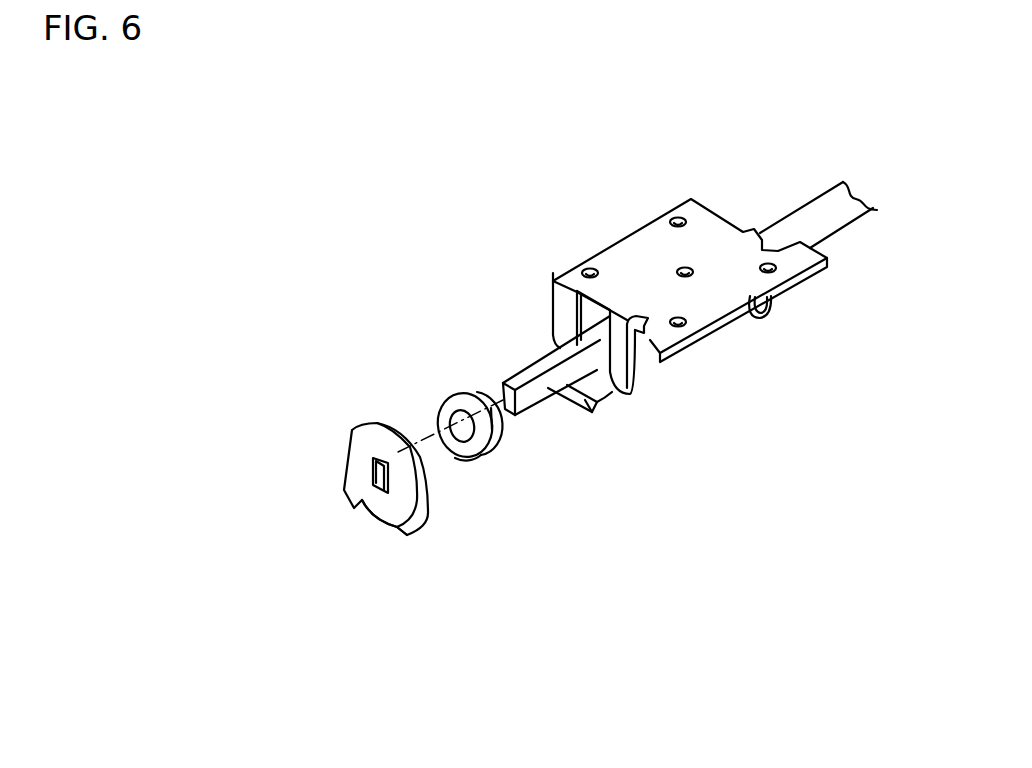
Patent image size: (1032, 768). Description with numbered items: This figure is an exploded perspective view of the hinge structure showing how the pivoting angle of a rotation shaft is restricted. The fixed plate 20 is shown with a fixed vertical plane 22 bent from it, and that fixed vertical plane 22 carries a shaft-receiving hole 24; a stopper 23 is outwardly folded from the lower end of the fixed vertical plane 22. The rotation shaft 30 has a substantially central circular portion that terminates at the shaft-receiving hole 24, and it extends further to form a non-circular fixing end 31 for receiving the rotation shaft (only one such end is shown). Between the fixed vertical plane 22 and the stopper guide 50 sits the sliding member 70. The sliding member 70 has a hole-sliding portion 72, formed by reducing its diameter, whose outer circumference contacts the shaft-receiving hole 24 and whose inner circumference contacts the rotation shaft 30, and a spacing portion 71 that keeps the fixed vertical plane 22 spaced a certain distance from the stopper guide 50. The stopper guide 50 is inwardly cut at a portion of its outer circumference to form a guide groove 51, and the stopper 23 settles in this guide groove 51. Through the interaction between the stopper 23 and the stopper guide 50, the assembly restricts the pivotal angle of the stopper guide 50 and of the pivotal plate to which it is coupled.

The fixed plate 20 is at (637, 247).
The fixed vertical plane 22 is at (560, 322).
The stopper 23 is at (603, 400).
The shaft-receiving hole 24 is at (622, 396).
The rotation shaft 30 is at (832, 210).
The non-circular fixing end 31 is at (548, 386).
The stopper guide 50 is at (377, 423).
The guide groove 51 is at (400, 534).
The sliding member 70 is at (457, 395).
The spacing portion 71 is at (492, 442).
The hole-sliding portion 72 is at (493, 420).